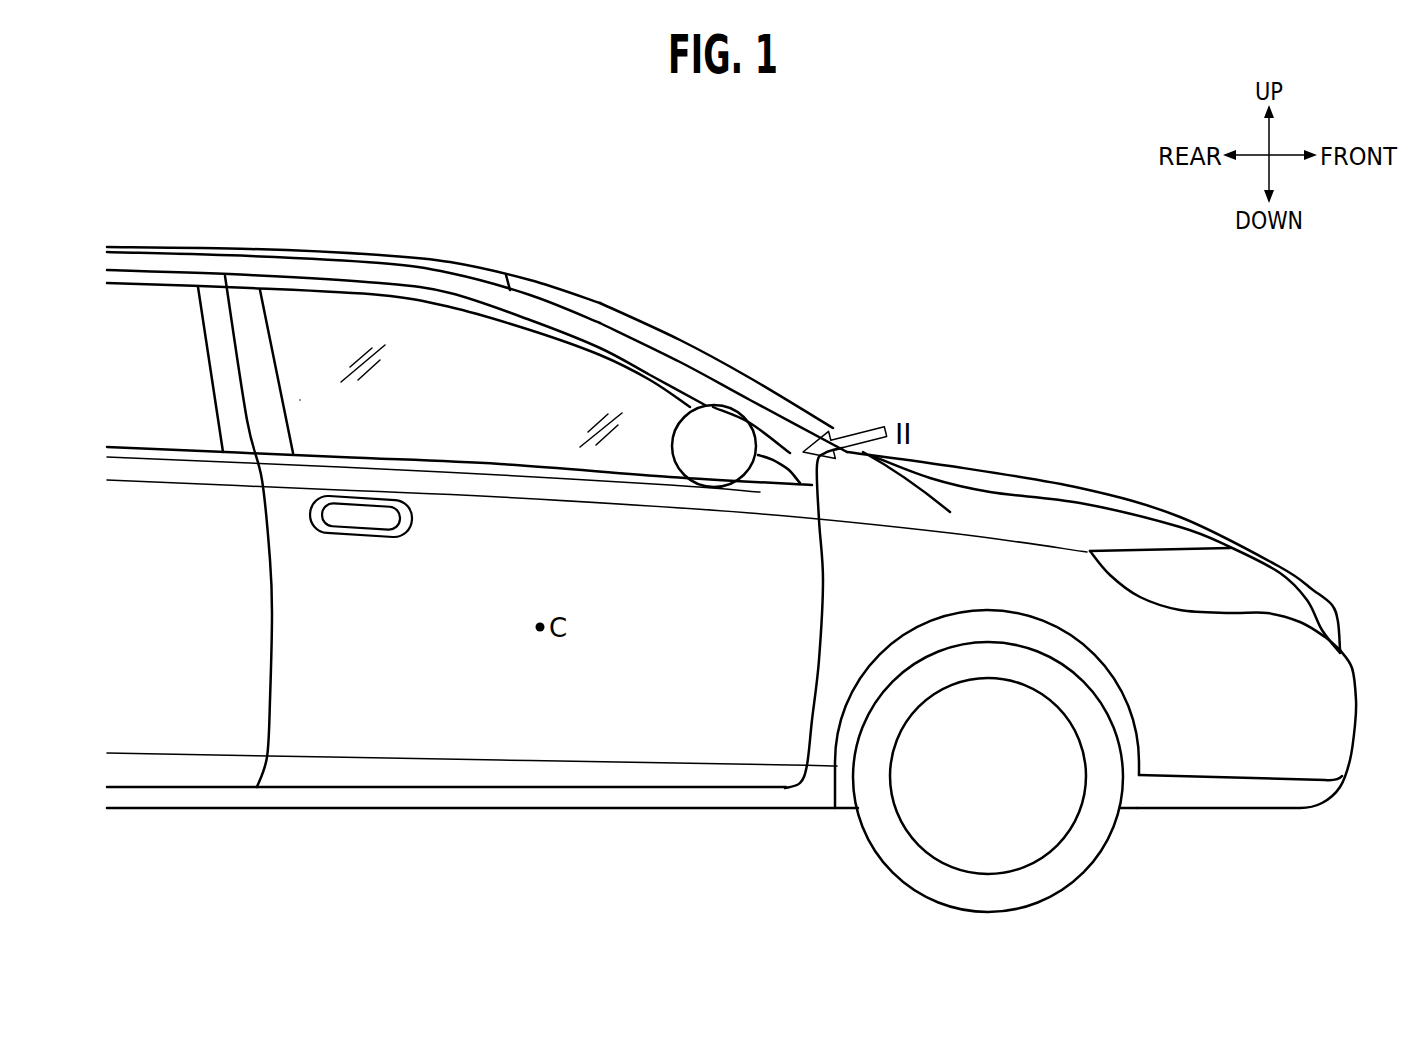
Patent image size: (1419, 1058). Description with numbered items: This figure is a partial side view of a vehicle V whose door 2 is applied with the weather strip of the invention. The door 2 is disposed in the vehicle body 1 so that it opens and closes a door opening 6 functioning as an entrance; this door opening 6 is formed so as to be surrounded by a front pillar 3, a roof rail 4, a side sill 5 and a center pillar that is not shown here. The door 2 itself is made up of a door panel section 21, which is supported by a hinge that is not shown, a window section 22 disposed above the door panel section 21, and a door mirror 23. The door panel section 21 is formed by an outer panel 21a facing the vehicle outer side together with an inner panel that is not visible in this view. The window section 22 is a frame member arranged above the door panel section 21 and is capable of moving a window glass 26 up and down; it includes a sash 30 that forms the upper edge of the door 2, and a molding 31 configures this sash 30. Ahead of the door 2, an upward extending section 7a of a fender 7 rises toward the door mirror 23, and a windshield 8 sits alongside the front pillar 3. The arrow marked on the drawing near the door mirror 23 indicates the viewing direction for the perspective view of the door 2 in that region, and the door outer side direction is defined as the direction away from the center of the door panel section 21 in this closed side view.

The vehicle body 1 is at (165, 262).
The door 2 is at (597, 531).
The front pillar 3 is at (627, 352).
The roof rail 4 is at (311, 262).
The side sill 5 is at (513, 795).
The door opening 6 is at (349, 292).
The fender 7 is at (782, 618).
The upward extending section of fender 7a is at (818, 465).
The windshield 8 is at (680, 350).
The door panel section 21 is at (597, 511).
The outer panel 21a is at (550, 522).
The window section 22 is at (267, 407).
The door mirror 23 is at (712, 430).
The window glass 26 is at (522, 353).
The sash 30 is at (448, 321).
The molding 31 is at (457, 303).
The vehicle V is at (718, 220).